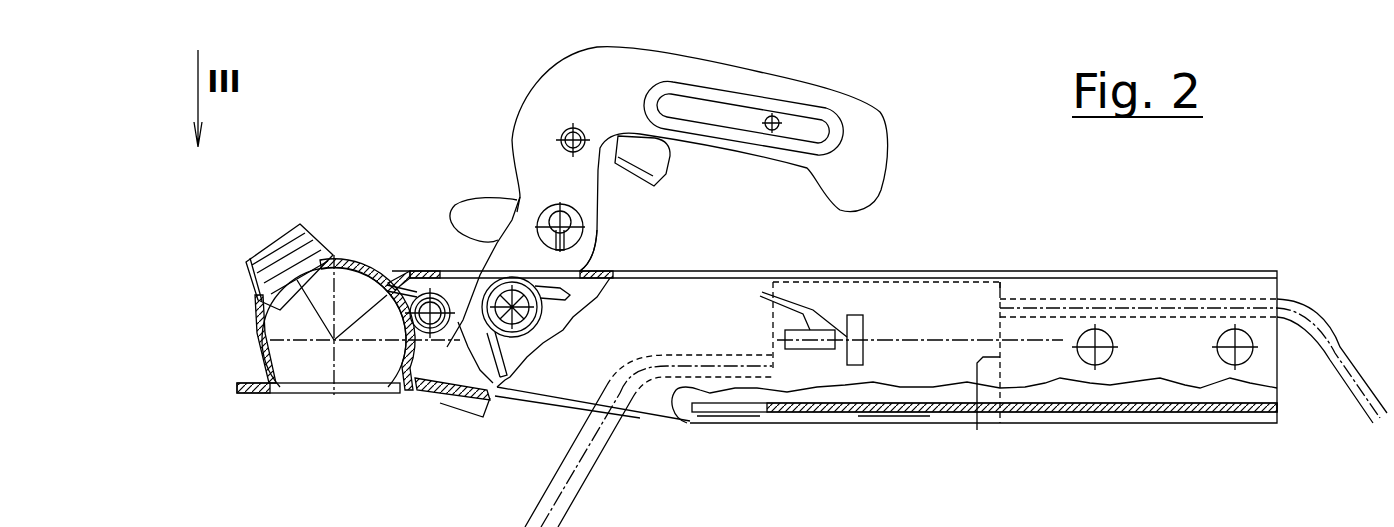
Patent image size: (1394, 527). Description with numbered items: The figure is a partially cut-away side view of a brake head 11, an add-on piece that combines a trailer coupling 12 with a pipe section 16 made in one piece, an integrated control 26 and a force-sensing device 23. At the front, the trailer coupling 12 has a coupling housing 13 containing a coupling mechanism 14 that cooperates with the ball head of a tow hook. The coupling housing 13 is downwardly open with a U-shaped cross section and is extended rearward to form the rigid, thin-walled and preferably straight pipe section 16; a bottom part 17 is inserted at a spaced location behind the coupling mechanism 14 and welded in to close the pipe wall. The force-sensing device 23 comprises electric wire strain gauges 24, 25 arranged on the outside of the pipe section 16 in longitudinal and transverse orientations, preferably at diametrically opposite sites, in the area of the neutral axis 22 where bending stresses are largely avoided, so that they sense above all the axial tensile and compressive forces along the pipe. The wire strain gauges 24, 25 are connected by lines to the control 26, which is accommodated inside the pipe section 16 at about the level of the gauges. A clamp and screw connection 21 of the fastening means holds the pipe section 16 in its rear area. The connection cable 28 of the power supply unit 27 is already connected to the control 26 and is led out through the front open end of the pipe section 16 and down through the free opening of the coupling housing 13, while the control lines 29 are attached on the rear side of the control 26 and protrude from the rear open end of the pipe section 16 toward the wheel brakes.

The brake head 11 is at (329, 174).
The trailer coupling 12 is at (418, 268).
The coupling housing 13 is at (257, 350).
The coupling mechanism 14 is at (511, 137).
The pipe section 16 is at (943, 270).
The bottom part 17 is at (1015, 410).
The clamp and screw connection 21 is at (1228, 353).
The neutral axis 22 is at (898, 340).
The force-sensing device 23 is at (783, 390).
The electric wire strain gauge 24 is at (805, 350).
The electric wire strain gauge 25 is at (857, 353).
The control 26 is at (977, 430).
The power supply unit 27 is at (748, 308).
The connection cable 28 is at (580, 441).
The control lines 29 is at (1340, 345).